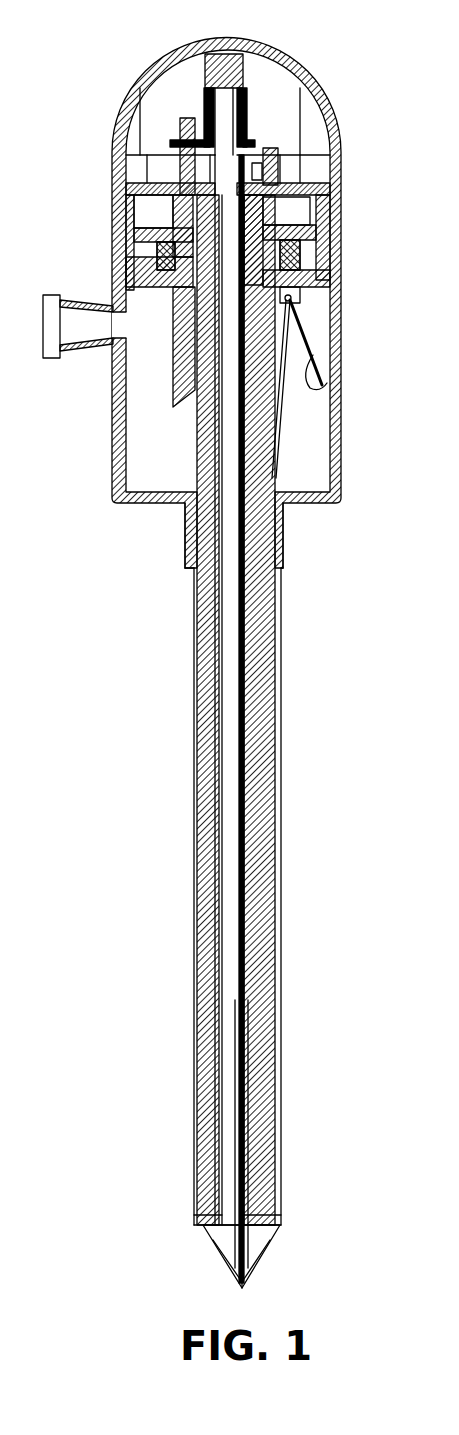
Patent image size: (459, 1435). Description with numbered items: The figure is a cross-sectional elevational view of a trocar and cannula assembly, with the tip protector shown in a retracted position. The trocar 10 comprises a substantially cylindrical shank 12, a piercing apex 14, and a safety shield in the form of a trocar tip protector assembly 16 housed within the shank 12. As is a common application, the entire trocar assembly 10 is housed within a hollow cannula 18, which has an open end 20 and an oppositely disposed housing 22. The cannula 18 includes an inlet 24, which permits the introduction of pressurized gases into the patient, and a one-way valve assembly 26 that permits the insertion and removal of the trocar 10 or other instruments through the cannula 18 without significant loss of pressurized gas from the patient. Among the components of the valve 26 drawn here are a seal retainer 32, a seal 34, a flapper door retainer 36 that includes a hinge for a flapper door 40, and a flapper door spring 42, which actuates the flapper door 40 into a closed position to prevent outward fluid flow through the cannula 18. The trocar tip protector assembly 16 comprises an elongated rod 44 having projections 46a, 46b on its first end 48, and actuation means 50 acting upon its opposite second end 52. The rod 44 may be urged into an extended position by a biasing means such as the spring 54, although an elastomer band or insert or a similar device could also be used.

The trocar 10 is at (197, 450).
The shank 12 is at (200, 763).
The piercing apex 14 is at (203, 1197).
The trocar tip protector assembly 16 is at (235, 1043).
The cannula 18 is at (115, 418).
The open end 20 is at (280, 1187).
The housing 22 is at (116, 384).
The inlet 24 is at (80, 302).
The one-way valve assembly 26 is at (333, 258).
The seal retainer 32 is at (330, 222).
The seal 34 is at (170, 262).
The flapper door retainer 36 is at (332, 248).
The flapper door 40 is at (273, 450).
The flapper door spring 42 is at (326, 388).
The elongated rod 44 is at (237, 905).
The projection 46a is at (267, 1245).
The projection 46b is at (217, 1252).
The first end 48 is at (248, 1280).
The actuation means 50 is at (256, 105).
The second end 52 is at (224, 96).
The spring 54 is at (205, 84).